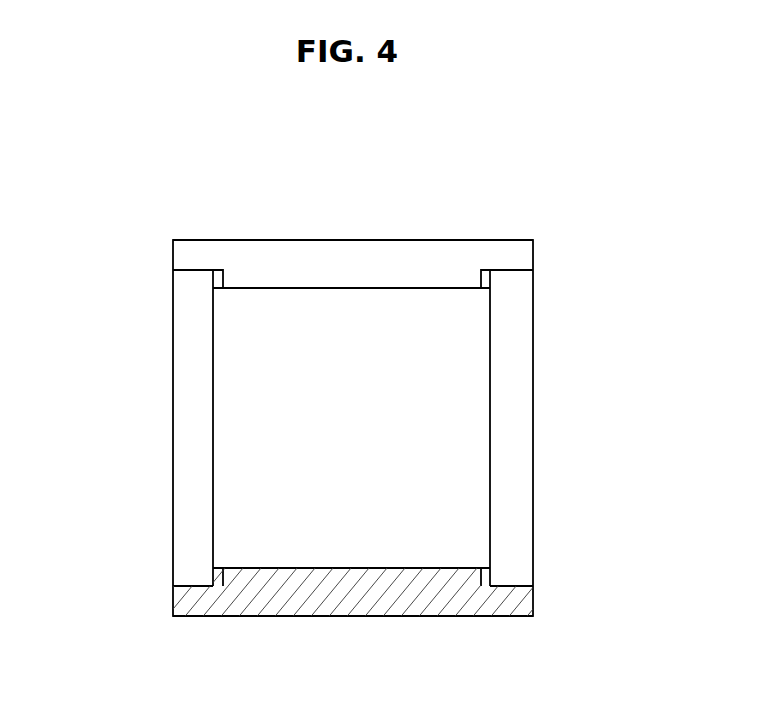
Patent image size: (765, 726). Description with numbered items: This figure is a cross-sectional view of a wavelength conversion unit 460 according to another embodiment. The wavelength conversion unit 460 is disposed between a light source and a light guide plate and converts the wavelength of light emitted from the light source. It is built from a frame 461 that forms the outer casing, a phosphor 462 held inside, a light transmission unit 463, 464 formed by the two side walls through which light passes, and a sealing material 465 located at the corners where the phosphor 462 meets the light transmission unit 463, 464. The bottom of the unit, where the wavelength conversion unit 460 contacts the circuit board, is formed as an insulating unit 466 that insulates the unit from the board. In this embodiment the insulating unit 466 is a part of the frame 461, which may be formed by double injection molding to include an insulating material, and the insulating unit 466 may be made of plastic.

The wavelength conversion unit 460 is at (124, 162).
The frame 461 is at (389, 262).
The phosphor 462 is at (298, 310).
The light transmission unit 463 is at (509, 413).
The light transmission unit 464 is at (193, 418).
The sealing material 465 is at (217, 282).
The insulating unit 466 is at (359, 596).